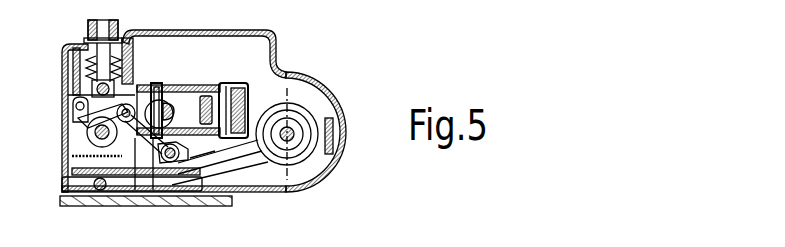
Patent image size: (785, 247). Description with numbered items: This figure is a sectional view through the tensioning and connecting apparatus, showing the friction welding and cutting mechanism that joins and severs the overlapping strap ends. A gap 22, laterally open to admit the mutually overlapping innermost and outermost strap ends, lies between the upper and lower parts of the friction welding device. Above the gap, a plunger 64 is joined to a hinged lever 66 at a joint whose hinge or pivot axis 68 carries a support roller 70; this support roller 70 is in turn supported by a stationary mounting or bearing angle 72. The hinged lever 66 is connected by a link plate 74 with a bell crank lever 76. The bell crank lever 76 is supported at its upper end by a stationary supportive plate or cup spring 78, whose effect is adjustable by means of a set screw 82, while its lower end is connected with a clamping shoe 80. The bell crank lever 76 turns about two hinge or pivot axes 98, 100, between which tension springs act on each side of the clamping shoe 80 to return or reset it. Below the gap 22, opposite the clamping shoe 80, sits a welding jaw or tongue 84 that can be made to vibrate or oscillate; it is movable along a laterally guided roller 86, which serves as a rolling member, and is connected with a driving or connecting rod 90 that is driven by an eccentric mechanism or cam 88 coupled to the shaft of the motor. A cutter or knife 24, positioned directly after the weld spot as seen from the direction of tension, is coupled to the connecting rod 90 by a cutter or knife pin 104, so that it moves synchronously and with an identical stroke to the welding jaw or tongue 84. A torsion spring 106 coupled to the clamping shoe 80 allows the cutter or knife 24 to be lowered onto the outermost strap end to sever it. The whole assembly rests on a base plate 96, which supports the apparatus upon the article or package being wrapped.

The gap 22 is at (77, 163).
The cutter or knife 24 is at (113, 179).
The plunger 64 is at (200, 104).
The hinged lever 66 is at (172, 90).
The hinge or pivot axis 68 is at (225, 95).
The support roller 70 is at (288, 75).
The stationary mounting or bearing angle 72 is at (250, 105).
The link plate 74 is at (147, 88).
The bell crank lever 76 is at (136, 152).
The stationary supportive plate or cup spring 78 is at (63, 60).
The clamping shoe 80 is at (74, 156).
The set screw 82 is at (88, 22).
The welding jaw or tongue 84 is at (78, 198).
The laterally guided roller 86 is at (100, 190).
The eccentric mechanism or cam 88 is at (292, 142).
The driving or connecting rod 90 is at (243, 170).
The base plate 96 is at (136, 176).
The hinge or pivot axis 98 is at (72, 80).
The hinge or pivot axis 100 is at (68, 133).
The cutter or knife pin 104 is at (194, 164).
The torsion spring 106 is at (68, 118).